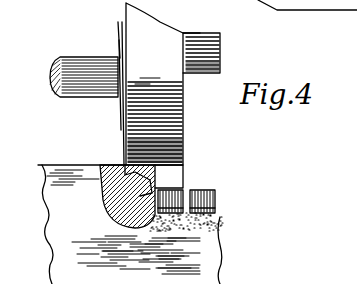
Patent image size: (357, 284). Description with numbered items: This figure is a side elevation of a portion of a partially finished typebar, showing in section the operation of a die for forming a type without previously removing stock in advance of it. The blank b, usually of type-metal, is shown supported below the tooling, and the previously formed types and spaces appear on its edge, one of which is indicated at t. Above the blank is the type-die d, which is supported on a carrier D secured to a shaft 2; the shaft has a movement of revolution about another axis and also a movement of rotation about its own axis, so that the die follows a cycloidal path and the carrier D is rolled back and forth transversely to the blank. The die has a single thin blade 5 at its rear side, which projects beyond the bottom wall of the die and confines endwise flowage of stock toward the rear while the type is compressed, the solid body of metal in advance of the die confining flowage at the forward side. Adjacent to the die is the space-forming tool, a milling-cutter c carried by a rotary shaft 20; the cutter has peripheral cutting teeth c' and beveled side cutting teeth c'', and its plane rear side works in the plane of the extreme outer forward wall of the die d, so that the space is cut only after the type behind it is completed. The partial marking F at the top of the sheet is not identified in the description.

The shaft 2 is at (221, 46).
The carrier D is at (174, 89).
The type-die d is at (157, 178).
The rotary shaft 20 is at (63, 95).
The milling-cutter c is at (94, 93).
The peripheral cutting teeth c' is at (105, 95).
The side cutting teeth c'' is at (100, 69).
The blade 5 is at (152, 200).
The bolt t is at (214, 213).
The blank b is at (208, 245).
The frame F is at (172, 6).